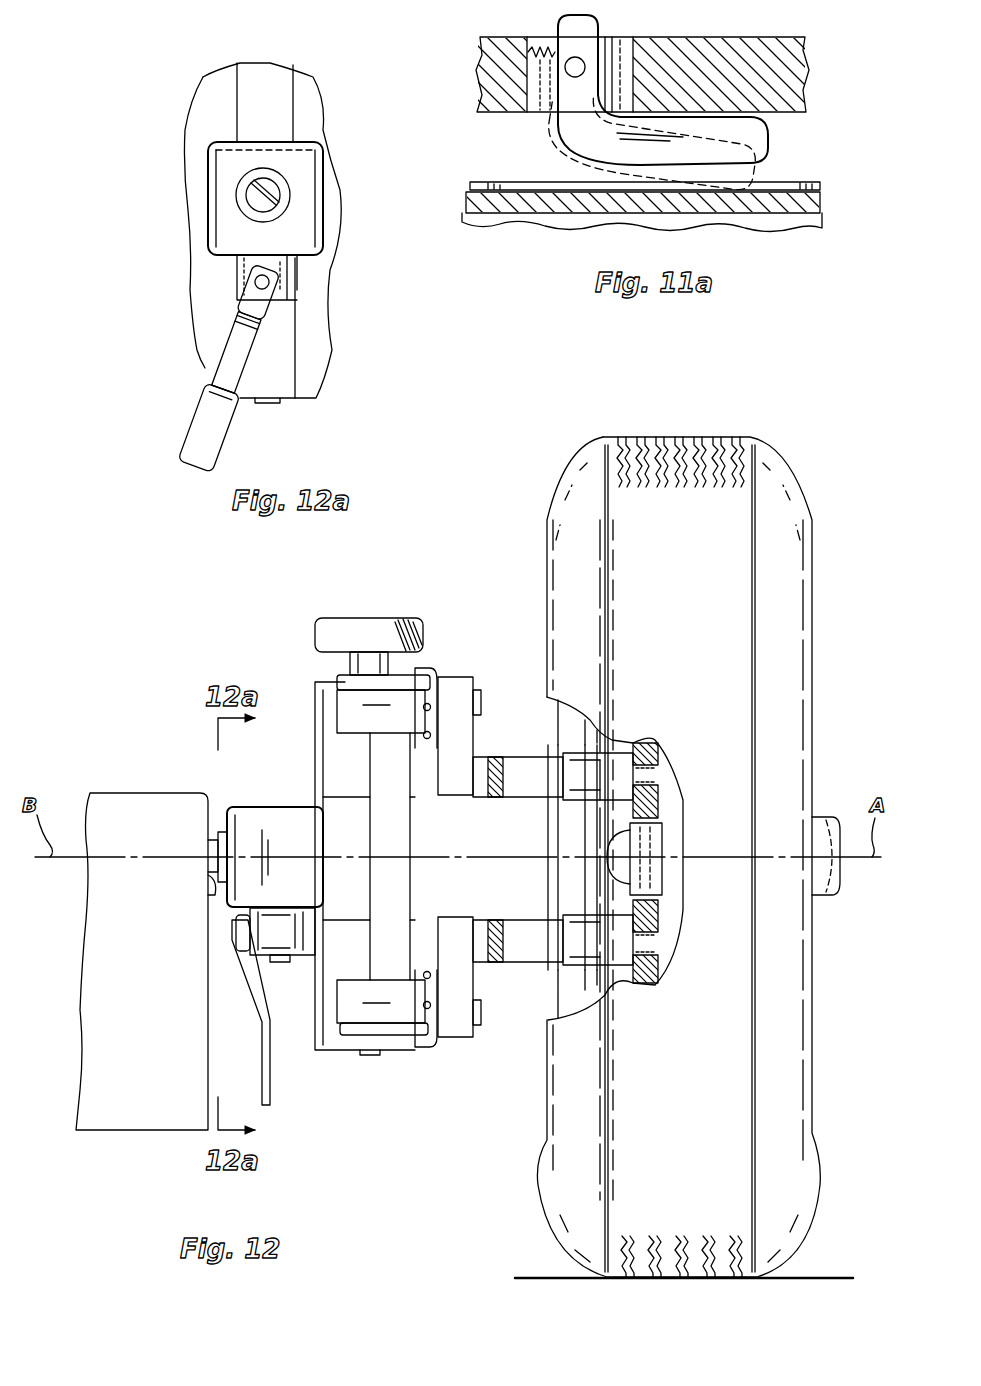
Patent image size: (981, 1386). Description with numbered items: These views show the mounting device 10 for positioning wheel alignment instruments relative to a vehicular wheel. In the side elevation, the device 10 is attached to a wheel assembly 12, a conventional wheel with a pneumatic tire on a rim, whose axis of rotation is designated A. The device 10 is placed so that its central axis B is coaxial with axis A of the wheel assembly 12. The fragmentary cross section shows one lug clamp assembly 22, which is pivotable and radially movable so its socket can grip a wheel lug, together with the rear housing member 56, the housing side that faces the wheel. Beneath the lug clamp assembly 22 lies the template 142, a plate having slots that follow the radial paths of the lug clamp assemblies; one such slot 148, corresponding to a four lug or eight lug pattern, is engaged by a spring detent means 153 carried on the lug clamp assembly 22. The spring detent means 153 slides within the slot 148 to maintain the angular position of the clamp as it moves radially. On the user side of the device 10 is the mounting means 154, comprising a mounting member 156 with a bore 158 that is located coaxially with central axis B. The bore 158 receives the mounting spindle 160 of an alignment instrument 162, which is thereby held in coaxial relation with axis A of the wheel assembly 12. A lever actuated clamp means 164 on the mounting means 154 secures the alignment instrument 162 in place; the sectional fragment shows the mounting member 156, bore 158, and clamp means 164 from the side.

In FIG. 12A, the mounting device 10 is at (322, 378).
In FIG. 12, the mounting device 10 is at (407, 1058).
In FIG. 12, the wheel assembly 12 is at (535, 1193).
In FIG. 11A, the lug clamp assembly 22 is at (810, 72).
In FIG. 11A, the rear housing member 56 is at (830, 207).
In FIG. 11A, the template 142 is at (824, 186).
In FIG. 11A, the slots 148 is at (490, 183).
In FIG. 11A, the spring detent means 153 is at (772, 140).
In FIG. 12A, the mounting means 154 is at (218, 258).
In FIG. 12, the mounting means 154 is at (279, 965).
In FIG. 12A, the mounting member 156 is at (208, 212).
In FIG. 12, the mounting member 156 is at (220, 830).
In FIG. 12A, the bore 158 is at (248, 190).
In FIG. 12, the mounting spindle 160 is at (212, 897).
In FIG. 12, the alignment instrument 162 is at (130, 1135).
In FIG. 12A, the lever actuated clamp means 164 is at (222, 355).
In FIG. 12, the lever actuated clamp means 164 is at (238, 970).